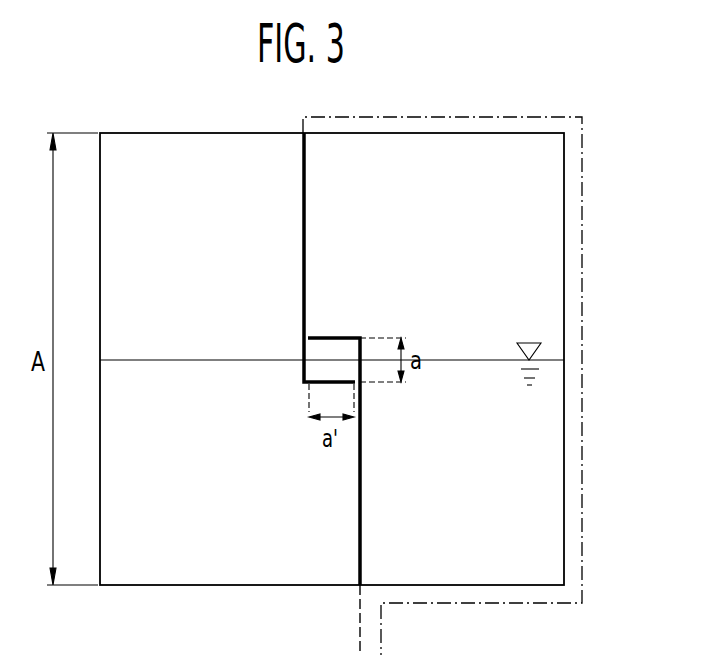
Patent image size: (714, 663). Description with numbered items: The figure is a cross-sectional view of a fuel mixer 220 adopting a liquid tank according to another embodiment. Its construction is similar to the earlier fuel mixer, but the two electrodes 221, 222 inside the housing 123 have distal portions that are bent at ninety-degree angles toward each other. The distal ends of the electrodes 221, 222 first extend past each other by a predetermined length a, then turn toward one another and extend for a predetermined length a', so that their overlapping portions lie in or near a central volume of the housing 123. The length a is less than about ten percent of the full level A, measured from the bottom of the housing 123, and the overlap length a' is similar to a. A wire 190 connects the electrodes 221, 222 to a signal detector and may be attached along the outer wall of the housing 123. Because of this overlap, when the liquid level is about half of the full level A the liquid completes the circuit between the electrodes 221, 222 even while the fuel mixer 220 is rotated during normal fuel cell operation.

The housing 123 is at (564, 200).
The wire 190 is at (582, 323).
The fuel mixer 220 is at (607, 70).
The electrode 221 is at (306, 231).
The electrode 222 is at (359, 480).